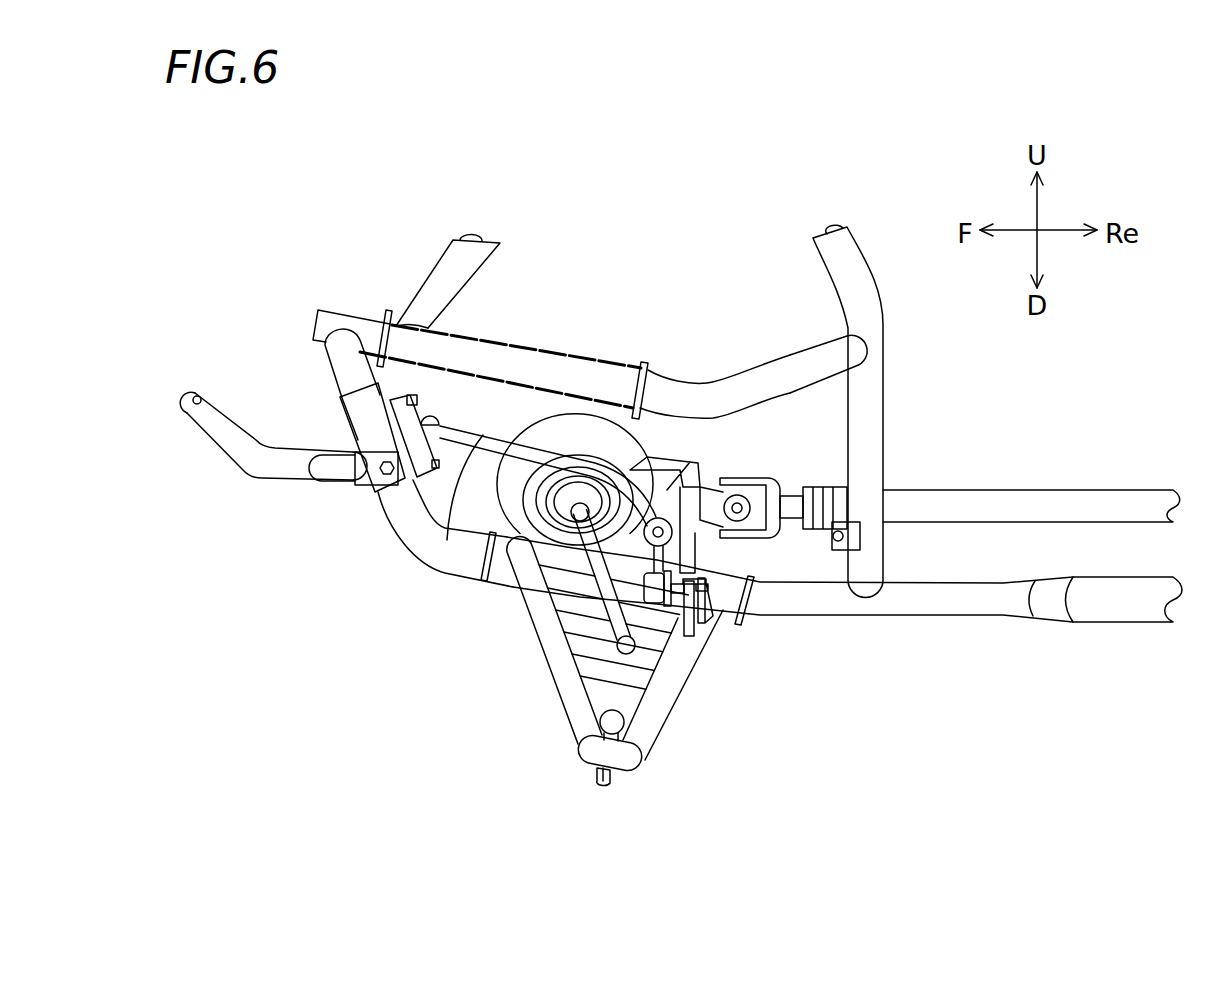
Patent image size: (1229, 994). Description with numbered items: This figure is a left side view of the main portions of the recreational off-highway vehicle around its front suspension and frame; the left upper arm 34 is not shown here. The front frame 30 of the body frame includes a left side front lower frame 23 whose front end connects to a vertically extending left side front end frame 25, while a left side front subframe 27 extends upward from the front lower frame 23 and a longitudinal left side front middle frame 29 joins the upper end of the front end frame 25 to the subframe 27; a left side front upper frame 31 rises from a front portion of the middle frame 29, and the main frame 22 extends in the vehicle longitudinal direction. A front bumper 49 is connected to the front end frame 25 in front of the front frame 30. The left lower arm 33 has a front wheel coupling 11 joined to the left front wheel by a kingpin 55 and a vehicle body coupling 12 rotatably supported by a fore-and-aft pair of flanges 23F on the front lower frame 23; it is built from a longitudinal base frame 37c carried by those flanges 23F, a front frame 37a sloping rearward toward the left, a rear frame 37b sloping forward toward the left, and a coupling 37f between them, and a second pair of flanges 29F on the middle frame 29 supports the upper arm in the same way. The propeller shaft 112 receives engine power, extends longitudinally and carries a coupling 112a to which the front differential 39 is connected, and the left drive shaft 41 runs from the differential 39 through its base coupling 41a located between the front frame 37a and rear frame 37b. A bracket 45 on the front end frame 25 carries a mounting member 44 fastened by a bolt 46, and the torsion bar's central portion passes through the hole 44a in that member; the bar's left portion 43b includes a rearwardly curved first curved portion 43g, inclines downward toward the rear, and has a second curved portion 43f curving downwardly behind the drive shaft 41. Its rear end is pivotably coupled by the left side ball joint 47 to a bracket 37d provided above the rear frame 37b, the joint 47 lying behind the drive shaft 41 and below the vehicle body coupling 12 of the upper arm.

The front wheel coupling 11 is at (593, 757).
The vehicle body coupling 12 is at (573, 370).
The main frame 22 is at (1120, 600).
The left side front lower frame 23 is at (844, 619).
The flanges 23F is at (483, 570).
The left side front end frame 25 is at (346, 356).
The left side front subframe 27 is at (873, 417).
The left side front middle frame 29 is at (502, 302).
The flanges 29F is at (388, 312).
The front frame 30 is at (523, 447).
The left side front upper frame 31 is at (453, 252).
The left lower arm 33 is at (628, 788).
The left upper arm 34 is at (549, 350).
The front frame 37a is at (573, 713).
The rear frame 37b is at (653, 705).
The base frame 37c is at (567, 565).
The bracket 37d is at (718, 597).
The coupling 37f is at (585, 657).
The front differential 39 is at (743, 430).
The left drive shaft 41 is at (623, 628).
The base coupling 41a is at (510, 545).
The left portion 43b is at (480, 532).
The second curved portion 43f is at (663, 427).
The first curved portion 43g is at (333, 470).
The mounting member 44 is at (453, 408).
The hole 44a is at (340, 383).
The bracket 45 is at (400, 443).
The bolt 46 is at (420, 400).
The left side ball joint 47 is at (697, 540).
The front bumper 49 is at (222, 458).
The kingpin 55 is at (607, 773).
The propeller shaft 112 is at (1067, 498).
The coupling 112a is at (760, 497).